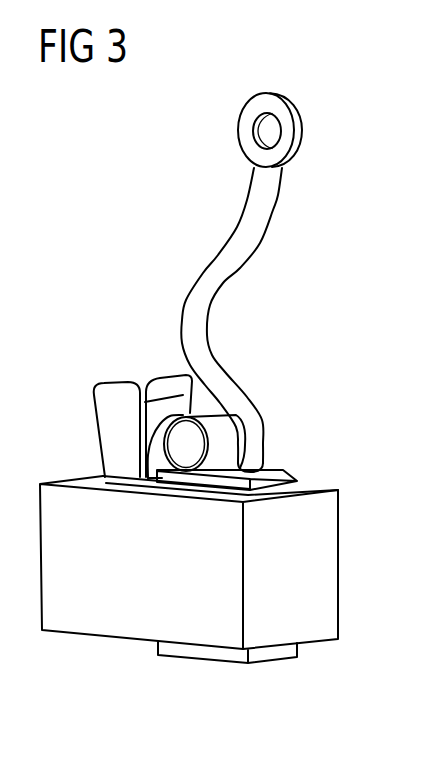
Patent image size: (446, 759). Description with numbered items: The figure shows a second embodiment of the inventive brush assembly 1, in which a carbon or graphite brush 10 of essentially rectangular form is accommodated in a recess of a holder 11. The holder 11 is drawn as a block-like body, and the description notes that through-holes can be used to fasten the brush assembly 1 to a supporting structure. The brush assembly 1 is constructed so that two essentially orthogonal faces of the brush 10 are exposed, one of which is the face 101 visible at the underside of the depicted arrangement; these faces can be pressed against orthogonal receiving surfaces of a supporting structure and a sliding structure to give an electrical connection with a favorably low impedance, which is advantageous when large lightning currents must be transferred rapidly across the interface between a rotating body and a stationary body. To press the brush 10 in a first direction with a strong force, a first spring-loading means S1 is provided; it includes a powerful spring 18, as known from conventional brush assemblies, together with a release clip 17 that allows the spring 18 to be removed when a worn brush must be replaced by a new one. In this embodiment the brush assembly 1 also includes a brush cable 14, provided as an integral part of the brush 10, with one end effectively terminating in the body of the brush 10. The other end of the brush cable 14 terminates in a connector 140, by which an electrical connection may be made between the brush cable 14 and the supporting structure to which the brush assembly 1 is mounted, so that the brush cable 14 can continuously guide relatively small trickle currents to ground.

The brush assembly 1 is at (91, 238).
The brush 10 is at (297, 480).
The holder 11 is at (330, 583).
The face 101 is at (275, 666).
The brush cable 14 is at (258, 229).
The connector 140 is at (247, 133).
The release clip 17 is at (108, 438).
The spring 18 is at (228, 436).
The first spring-loading means S1 is at (143, 386).